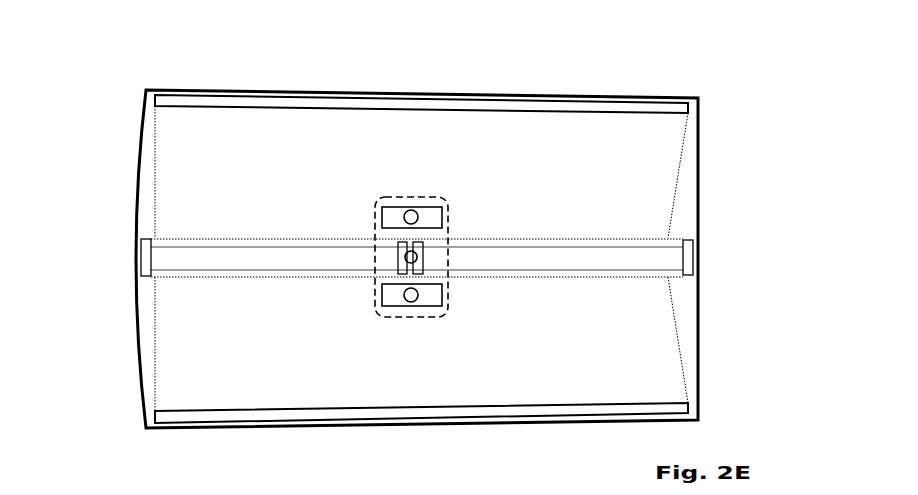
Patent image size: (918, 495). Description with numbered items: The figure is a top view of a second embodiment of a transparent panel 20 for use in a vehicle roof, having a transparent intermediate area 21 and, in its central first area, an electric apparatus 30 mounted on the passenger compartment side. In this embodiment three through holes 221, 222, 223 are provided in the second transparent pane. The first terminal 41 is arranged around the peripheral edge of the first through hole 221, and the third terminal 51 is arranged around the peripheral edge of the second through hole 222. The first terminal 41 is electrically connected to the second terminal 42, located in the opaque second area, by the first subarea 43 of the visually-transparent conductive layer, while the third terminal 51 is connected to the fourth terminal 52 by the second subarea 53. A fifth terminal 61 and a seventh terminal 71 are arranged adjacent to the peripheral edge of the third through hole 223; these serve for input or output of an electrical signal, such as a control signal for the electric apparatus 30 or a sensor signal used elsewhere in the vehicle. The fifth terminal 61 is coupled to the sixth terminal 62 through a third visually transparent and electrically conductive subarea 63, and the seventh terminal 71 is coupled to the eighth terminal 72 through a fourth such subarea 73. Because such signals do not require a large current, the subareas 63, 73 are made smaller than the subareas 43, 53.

The transparent panel 20 is at (546, 78).
The transparent intermediate area 21 is at (679, 224).
The electric apparatus 30 is at (405, 195).
The first terminal 41 is at (430, 218).
The second terminal 42 is at (453, 108).
The first subarea of the visually-transparent conductive layer 43 is at (284, 148).
The third terminal 51 is at (435, 298).
The fourth terminal 52 is at (415, 413).
The second subarea of the visually-transparent conductive layer 53 is at (285, 383).
The fifth terminal 61 is at (423, 259).
The sixth terminal 62 is at (686, 258).
The third visually transparent and electrically conductive subarea 63 is at (637, 262).
The seventh terminal 71 is at (400, 265).
The eighth terminal 72 is at (150, 261).
The fourth visually transparent and electrically conductive subarea 73 is at (287, 262).
The first through hole 221 is at (417, 210).
The second through hole 222 is at (414, 302).
The third through hole 223 is at (404, 257).